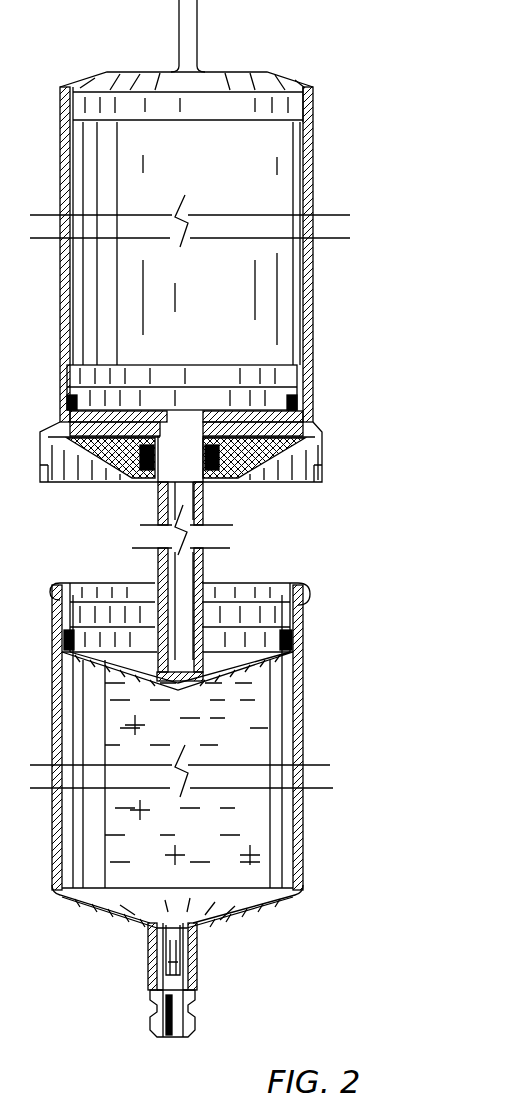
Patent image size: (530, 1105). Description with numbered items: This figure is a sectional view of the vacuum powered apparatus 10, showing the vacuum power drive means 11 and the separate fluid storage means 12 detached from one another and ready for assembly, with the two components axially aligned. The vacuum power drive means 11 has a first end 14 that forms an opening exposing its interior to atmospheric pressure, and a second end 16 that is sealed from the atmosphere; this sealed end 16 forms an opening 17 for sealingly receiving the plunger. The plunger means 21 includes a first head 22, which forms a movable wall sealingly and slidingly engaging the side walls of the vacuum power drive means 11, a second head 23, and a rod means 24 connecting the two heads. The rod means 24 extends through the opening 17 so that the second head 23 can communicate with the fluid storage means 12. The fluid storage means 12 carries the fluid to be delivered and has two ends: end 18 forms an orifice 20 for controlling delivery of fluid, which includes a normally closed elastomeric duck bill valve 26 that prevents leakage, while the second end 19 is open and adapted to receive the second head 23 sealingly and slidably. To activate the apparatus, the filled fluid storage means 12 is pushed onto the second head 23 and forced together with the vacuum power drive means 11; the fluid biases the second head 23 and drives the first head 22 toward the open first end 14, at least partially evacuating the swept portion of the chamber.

The vacuum powered apparatus 10 is at (337, 166).
The vacuum power drive means 11 is at (313, 128).
The fluid storage means 12 is at (303, 660).
The first end 14 is at (297, 80).
The second end 16 is at (307, 491).
The opening 17 is at (203, 487).
The end 18 is at (247, 920).
The second end 19 is at (290, 588).
The orifice 20 is at (212, 923).
The plunger means 21 is at (243, 544).
The first head 22 is at (295, 376).
The second head 23 is at (297, 603).
The rod means 24 is at (203, 566).
The elastomeric duck bill valve 26 is at (197, 968).